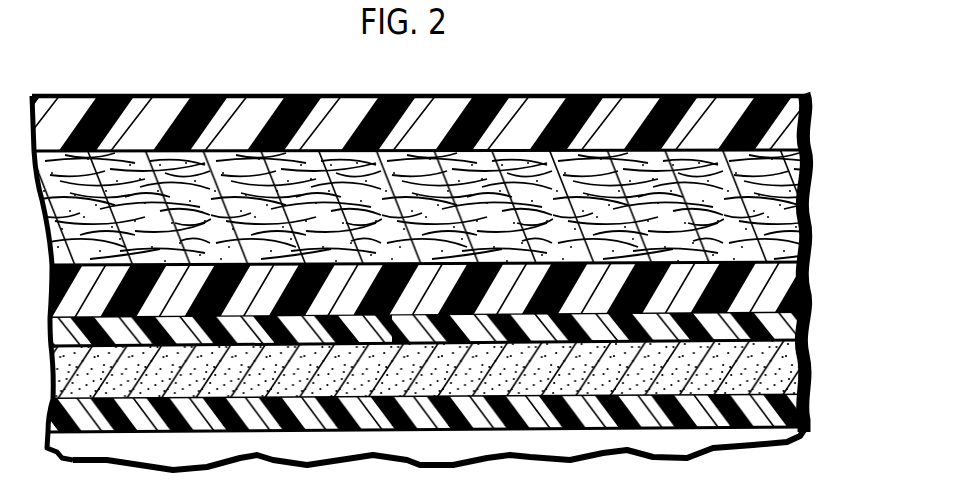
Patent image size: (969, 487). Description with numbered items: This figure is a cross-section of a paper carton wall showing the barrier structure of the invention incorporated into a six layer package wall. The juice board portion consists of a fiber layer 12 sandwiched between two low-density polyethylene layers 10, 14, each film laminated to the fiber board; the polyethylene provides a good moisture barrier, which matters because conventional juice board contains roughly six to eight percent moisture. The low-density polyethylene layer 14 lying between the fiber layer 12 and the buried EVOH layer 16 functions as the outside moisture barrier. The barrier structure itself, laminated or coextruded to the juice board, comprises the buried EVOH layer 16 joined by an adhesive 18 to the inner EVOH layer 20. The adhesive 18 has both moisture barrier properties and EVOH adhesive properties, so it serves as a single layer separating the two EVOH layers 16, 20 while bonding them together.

The low-density polyethylene layer 10 is at (812, 112).
The fiber layer 12 is at (809, 203).
The low-density polyethylene layer 14 is at (783, 291).
The buried EVOH layer 16 is at (805, 328).
The adhesive 18 is at (780, 371).
The inner EVOH layer 20 is at (770, 410).